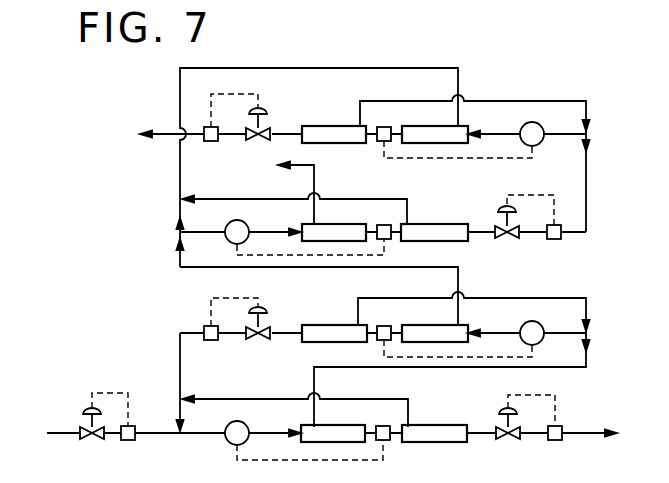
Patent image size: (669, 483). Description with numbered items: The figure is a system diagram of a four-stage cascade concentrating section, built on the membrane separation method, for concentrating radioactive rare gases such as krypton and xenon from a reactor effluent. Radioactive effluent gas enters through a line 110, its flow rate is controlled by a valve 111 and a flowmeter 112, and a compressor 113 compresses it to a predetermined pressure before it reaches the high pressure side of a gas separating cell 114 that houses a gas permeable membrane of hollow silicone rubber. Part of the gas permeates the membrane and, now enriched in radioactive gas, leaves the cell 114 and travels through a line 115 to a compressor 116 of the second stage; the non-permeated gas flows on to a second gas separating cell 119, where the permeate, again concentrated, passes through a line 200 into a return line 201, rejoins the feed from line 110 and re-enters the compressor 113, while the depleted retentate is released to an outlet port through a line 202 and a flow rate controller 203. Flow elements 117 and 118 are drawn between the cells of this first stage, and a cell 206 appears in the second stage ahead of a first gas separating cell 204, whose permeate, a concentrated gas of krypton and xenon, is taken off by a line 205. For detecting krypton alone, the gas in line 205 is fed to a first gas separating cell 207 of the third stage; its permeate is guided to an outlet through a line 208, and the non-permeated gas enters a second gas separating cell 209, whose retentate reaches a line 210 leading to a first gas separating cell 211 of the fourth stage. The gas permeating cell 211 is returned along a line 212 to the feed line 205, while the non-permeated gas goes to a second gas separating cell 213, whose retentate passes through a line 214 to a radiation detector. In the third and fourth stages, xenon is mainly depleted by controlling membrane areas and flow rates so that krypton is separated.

The line 110 is at (60, 434).
The valve 111 is at (90, 409).
The flowmeter 112 is at (128, 441).
The compressor 113 is at (229, 442).
The gas separating cell 114 is at (335, 443).
The line 115 is at (314, 380).
The compressor 116 is at (522, 324).
The flow meter 117 is at (383, 441).
The connecting line 118 is at (394, 427).
The second gas separating cell 119 is at (447, 426).
The line 200 is at (267, 399).
The return line 201 is at (180, 345).
The line 202 is at (483, 434).
The flow rate controller 203 is at (555, 441).
The first gas separating cell 204 is at (447, 325).
The line 205 is at (458, 268).
The heat exchanger 206 is at (332, 325).
The first gas separating cell 207 is at (305, 224).
The line 208 is at (315, 174).
The second gas separating cell 209 is at (439, 224).
The line 210 is at (588, 204).
The first gas separating cell 211 is at (437, 143).
The transfer line 212 is at (305, 68).
The second gas separating cell 213 is at (318, 126).
The line 214 is at (163, 136).